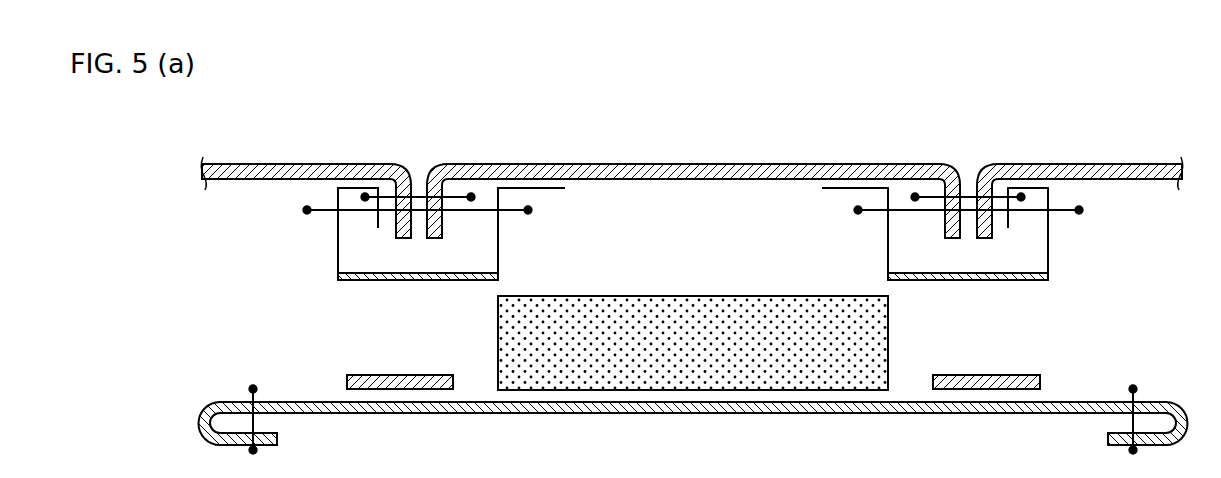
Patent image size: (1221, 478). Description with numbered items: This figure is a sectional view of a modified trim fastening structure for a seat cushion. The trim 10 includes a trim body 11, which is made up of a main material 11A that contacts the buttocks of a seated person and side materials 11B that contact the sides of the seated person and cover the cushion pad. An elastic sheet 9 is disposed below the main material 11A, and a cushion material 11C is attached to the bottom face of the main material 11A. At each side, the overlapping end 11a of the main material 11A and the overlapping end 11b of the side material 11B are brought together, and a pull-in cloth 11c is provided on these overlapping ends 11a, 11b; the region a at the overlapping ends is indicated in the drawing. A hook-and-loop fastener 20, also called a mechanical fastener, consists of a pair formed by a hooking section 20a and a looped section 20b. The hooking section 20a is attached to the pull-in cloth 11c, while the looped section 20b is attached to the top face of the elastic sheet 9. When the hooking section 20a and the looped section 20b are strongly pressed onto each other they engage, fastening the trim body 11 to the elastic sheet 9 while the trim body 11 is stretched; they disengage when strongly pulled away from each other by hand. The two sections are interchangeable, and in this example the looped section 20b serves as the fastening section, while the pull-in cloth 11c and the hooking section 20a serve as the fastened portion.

The trim 10 is at (841, 157).
The trim body 11 is at (692, 238).
The main material 11A is at (689, 163).
The side material 11B is at (294, 163).
The cushion material 11C is at (868, 336).
The overlapping end of the main material 11a is at (435, 240).
The overlapping end of the side material 11b is at (403, 240).
The pull-in cloth 11c is at (352, 258).
The hook-and-loop fastener 20 is at (242, 295).
The hooking section 20a is at (360, 282).
The looped section 20b is at (347, 382).
The elastic sheet 9 is at (705, 416).
The gap a is at (471, 192).